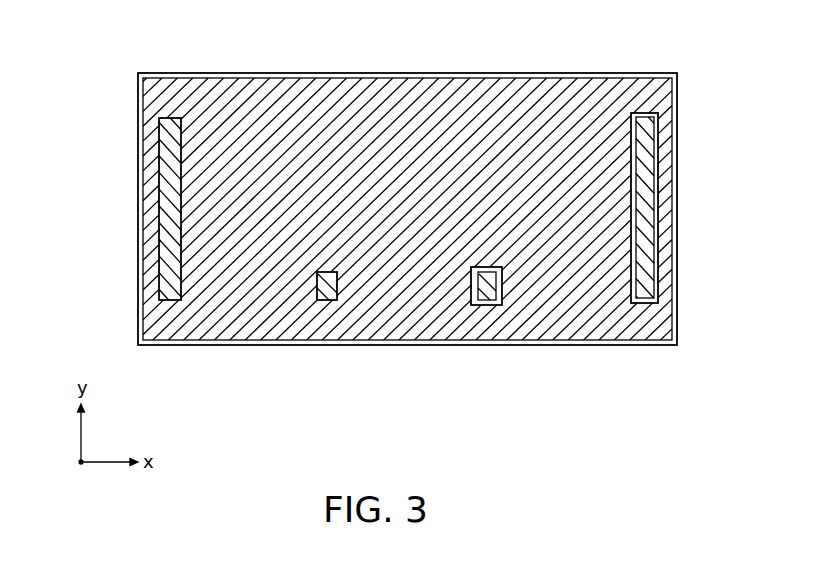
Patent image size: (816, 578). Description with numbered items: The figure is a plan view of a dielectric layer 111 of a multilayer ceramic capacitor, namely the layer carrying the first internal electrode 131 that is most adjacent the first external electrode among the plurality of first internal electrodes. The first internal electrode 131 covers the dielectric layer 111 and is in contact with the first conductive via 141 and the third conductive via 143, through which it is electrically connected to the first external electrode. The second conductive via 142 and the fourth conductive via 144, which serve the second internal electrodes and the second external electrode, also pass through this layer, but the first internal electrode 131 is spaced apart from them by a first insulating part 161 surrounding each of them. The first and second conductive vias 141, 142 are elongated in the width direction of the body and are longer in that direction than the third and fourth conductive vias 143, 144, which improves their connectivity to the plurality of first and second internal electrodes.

The dielectric layer 111 is at (633, 74).
The first internal electrode 131 is at (539, 87).
The first conductive via 141 is at (176, 301).
The second conductive via 142 is at (648, 302).
The third conductive via 143 is at (332, 300).
The fourth conductive via 144 is at (485, 305).
The first insulating part 161 is at (490, 302).